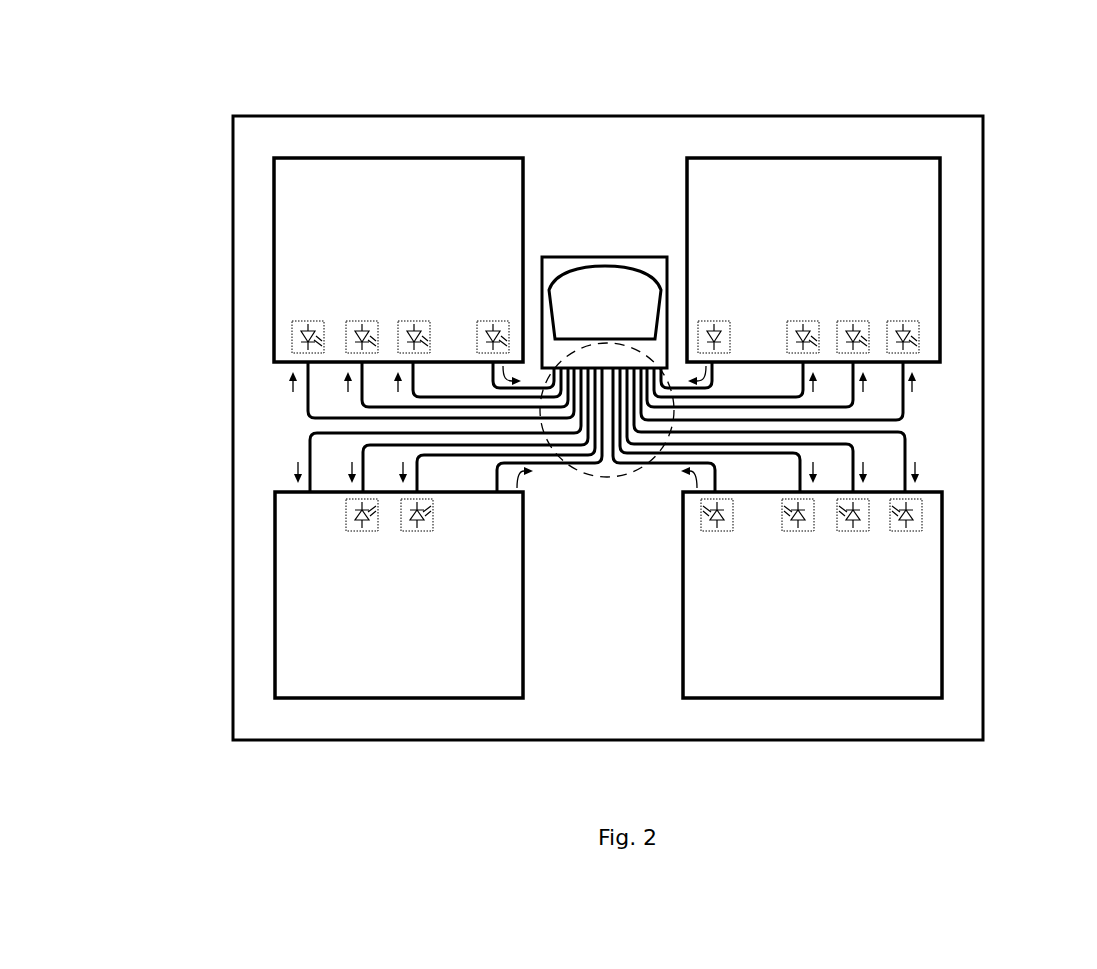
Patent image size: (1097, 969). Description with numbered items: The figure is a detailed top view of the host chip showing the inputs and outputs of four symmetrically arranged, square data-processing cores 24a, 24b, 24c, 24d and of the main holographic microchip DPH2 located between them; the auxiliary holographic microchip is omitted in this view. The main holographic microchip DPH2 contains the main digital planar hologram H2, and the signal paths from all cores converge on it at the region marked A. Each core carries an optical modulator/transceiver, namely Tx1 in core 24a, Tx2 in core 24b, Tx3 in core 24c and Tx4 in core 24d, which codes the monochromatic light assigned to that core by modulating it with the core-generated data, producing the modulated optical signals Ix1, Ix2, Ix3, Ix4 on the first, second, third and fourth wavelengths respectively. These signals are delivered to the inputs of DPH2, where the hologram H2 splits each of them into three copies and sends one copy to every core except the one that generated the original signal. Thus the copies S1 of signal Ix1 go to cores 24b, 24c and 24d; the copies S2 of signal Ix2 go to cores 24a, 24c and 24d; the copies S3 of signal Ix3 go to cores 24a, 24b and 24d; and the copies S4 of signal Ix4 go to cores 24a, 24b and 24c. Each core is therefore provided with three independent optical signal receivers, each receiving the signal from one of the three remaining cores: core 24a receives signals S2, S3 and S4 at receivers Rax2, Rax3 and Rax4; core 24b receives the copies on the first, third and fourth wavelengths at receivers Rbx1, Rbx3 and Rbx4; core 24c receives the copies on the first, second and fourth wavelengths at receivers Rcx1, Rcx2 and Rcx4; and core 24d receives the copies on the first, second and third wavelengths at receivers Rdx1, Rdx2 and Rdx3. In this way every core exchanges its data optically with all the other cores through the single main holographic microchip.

The data-processing core 24a is at (287, 212).
The data-processing core 24b is at (930, 292).
The data-processing core 24c is at (293, 613).
The data-processing core 24d is at (930, 545).
The main holographic microchip DPH2 is at (557, 268).
The main digital planar hologram H2 is at (600, 282).
The bus node A is at (612, 480).
The optical signal receiver Rax2 is at (306, 320).
The optical signal receiver Rax3 is at (361, 320).
The optical signal receiver Rax4 is at (414, 320).
The optical modulator/transceiver Tx1 is at (493, 318).
The modulated optical signal Ix1 is at (512, 372).
The modulated optical signal Ix2 is at (670, 430).
The optical modulator/transceiver Tx2 is at (716, 318).
The optical signal receiver Rbx4 is at (803, 320).
The optical signal receiver Rbx3 is at (853, 320).
The optical signal receiver Rbx1 is at (903, 320).
The optical signal receiver Rcx1 is at (307, 533).
The optical signal receiver Rcx2 is at (363, 533).
The optical signal receiver Rcx4 is at (417, 533).
The optical modulator/transceiver Tx3 is at (497, 523).
The modulated optical signal Ix3 is at (525, 486).
The modulated optical signal Ix4 is at (690, 482).
The optical modulator/transceiver Tx4 is at (718, 533).
The optical signal receiver Rdx3 is at (798, 533).
The optical signal receiver Rdx2 is at (853, 533).
The optical signal receiver Rdx1 is at (907, 533).
The signal copy S1 is at (913, 385).
The signal copy S2 is at (290, 388).
The signal copy S3 is at (346, 388).
The signal copy S4 is at (397, 388).